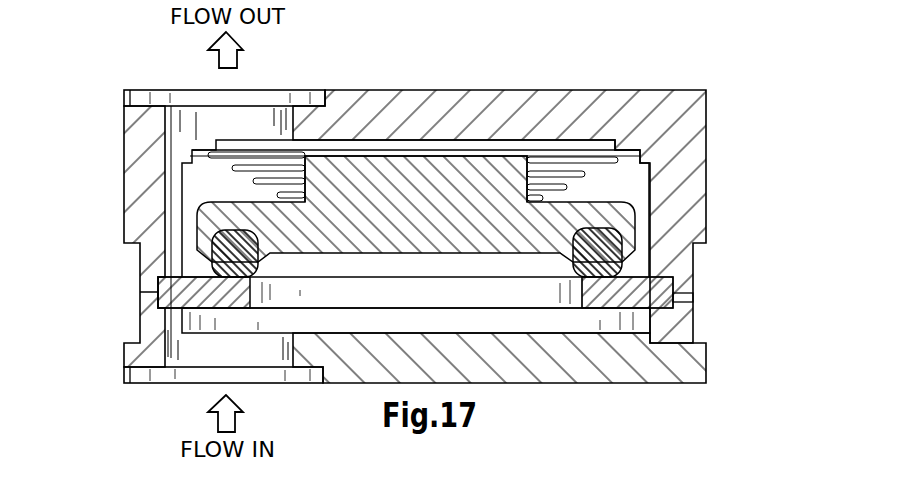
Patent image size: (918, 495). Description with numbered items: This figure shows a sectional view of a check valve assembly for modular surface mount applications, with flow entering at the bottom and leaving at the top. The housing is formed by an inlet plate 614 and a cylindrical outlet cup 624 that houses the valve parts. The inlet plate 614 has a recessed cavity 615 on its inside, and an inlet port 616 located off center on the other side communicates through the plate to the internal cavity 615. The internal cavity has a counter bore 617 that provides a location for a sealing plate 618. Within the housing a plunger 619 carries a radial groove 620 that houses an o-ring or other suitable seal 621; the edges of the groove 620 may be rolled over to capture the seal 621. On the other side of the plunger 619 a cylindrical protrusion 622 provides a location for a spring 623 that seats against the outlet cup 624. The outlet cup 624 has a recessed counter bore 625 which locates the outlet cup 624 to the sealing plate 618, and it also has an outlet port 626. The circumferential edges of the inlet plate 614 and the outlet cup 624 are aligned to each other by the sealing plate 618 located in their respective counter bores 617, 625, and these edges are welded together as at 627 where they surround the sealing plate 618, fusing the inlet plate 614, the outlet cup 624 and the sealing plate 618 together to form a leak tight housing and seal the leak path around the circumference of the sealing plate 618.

The inlet plate 614 is at (698, 362).
The recessed cavity 615 is at (632, 327).
The inlet port 616 is at (177, 347).
The counter bore 617 is at (692, 302).
The sealing plate 618 is at (617, 297).
The plunger 619 is at (608, 210).
The radial groove 620 is at (615, 230).
The seal 621 is at (605, 250).
The cylindrical protrusion 622 is at (502, 170).
The spring 623 is at (552, 177).
The outlet cup 624 is at (693, 108).
The recessed counter bore 625 is at (160, 280).
The outlet port 626 is at (263, 118).
The weld 627 is at (128, 292).